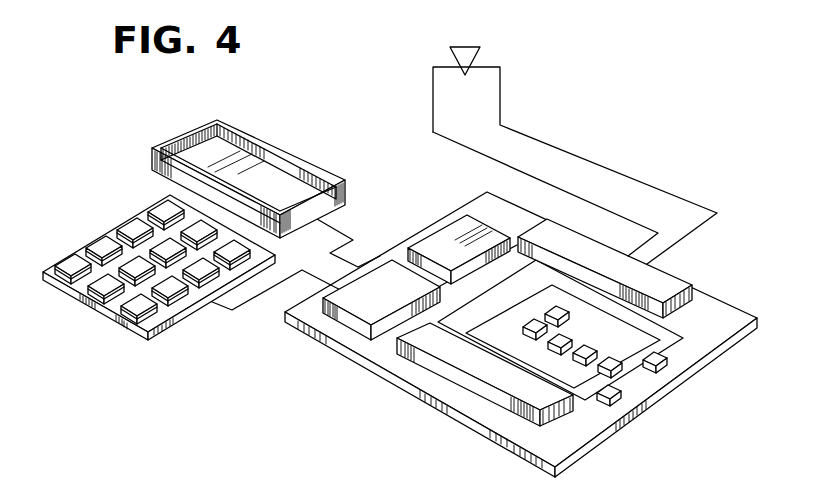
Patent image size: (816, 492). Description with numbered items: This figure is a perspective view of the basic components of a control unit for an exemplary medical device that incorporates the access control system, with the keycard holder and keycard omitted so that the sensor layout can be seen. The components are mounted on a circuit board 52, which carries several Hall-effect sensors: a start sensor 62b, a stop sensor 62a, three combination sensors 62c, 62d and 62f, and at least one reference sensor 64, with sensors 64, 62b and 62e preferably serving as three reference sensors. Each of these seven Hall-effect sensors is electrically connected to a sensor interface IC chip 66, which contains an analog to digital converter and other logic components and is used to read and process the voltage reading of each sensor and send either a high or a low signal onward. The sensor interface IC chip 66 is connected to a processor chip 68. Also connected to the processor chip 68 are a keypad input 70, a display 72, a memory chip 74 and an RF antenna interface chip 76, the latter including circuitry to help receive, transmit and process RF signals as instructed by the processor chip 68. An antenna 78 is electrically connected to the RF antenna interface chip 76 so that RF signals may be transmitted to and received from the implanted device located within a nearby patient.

The circuit board 52 is at (510, 423).
The stop sensor 62a is at (562, 305).
The start sensor 62b is at (667, 362).
The combination sensor 62c is at (549, 325).
The combination sensor 62d is at (550, 343).
The reference sensor 62e is at (590, 348).
The combination sensor 62f is at (620, 362).
The reference sensor 64 is at (622, 393).
The sensor interface IC chip 66 is at (452, 370).
The processor chip 68 is at (358, 302).
The keypad input 70 is at (112, 310).
The display 72 is at (242, 142).
The memory chip 74 is at (448, 235).
The RF antenna interface chip 76 is at (667, 283).
The antenna 78 is at (465, 57).